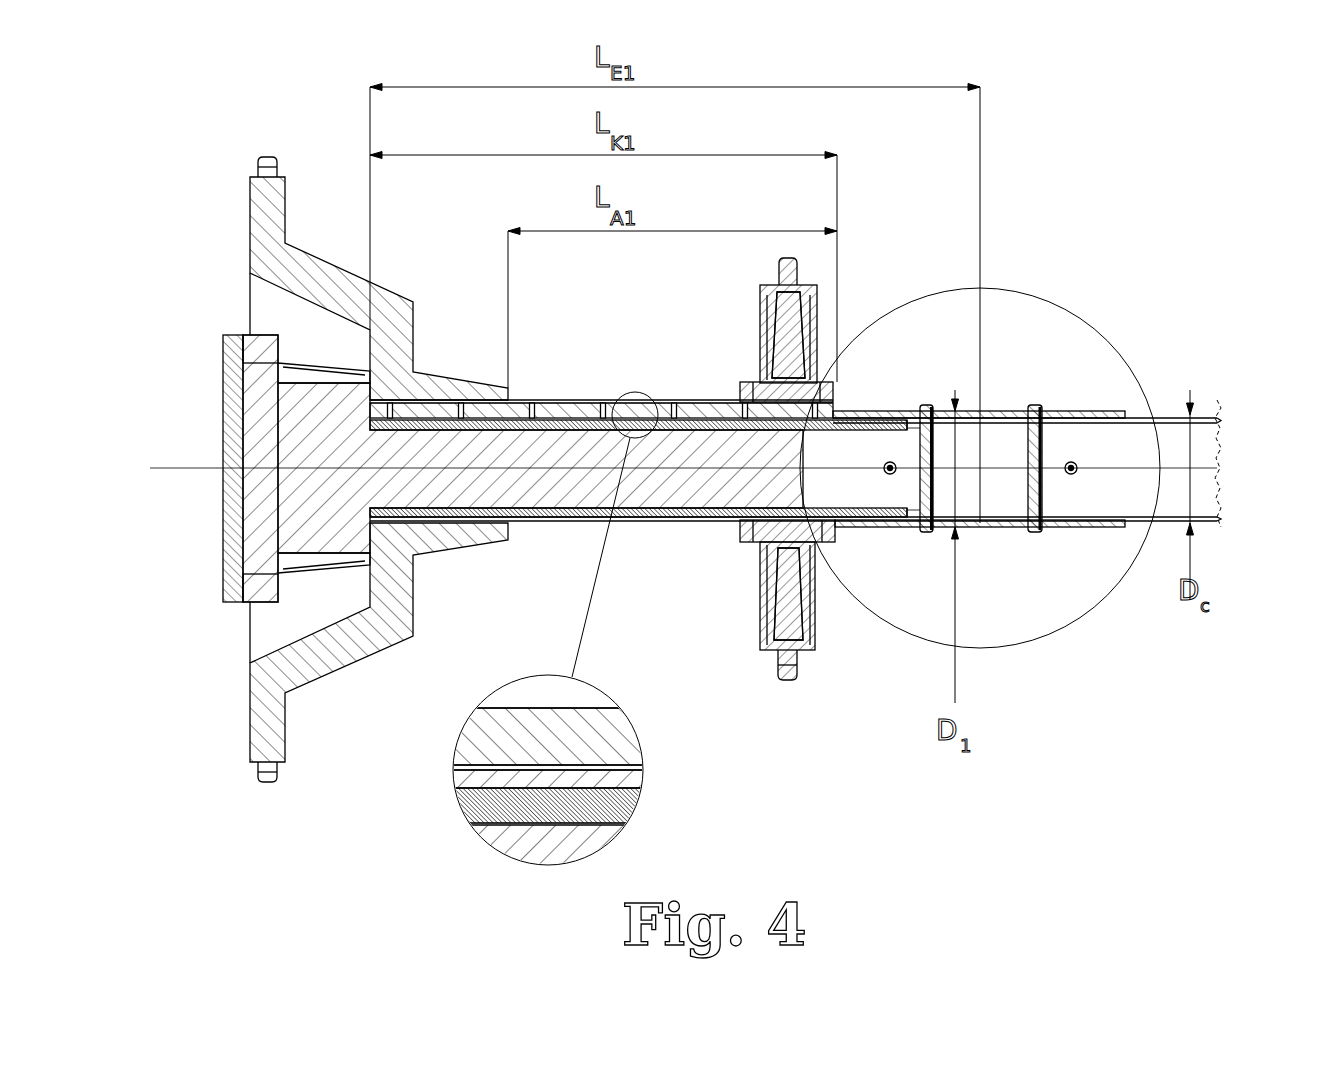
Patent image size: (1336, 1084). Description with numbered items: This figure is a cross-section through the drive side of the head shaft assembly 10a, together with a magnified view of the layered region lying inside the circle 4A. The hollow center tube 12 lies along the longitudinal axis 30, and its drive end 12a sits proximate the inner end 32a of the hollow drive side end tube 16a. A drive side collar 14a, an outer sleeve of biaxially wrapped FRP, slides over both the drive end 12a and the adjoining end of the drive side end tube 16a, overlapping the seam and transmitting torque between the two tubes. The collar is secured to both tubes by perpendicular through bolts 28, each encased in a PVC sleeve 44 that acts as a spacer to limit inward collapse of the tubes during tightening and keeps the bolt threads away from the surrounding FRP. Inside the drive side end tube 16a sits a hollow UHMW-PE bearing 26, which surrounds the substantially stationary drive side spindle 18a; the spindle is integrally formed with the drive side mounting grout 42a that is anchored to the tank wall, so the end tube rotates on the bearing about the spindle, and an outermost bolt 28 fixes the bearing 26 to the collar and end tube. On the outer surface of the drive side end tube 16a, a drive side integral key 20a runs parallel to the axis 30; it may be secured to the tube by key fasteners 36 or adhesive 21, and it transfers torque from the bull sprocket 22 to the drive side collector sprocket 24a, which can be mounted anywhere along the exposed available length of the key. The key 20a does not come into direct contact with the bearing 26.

The shaft arrangement 10a is at (335, 125).
The center tube 12 is at (1167, 523).
The drive end 12a is at (1165, 450).
The drive side collar 14a is at (1110, 413).
The drive side end tube 16a is at (563, 523).
The drive side spindle 18a is at (633, 490).
The drive side integral key 20a is at (522, 400).
The adhesives 21 is at (463, 767).
The bull sprocket 22 is at (414, 600).
The drive side collector sprocket 24a is at (773, 663).
The bearing 26 is at (885, 518).
The through bolts 28 is at (1069, 468).
The longitudinal axis 30 is at (197, 468).
The inner end 32a is at (940, 503).
The key fasteners 36 is at (673, 402).
The drive side mounting grout 42a is at (225, 603).
The PVC sleeves 44 is at (1073, 480).
The detail region 4A is at (1063, 630).